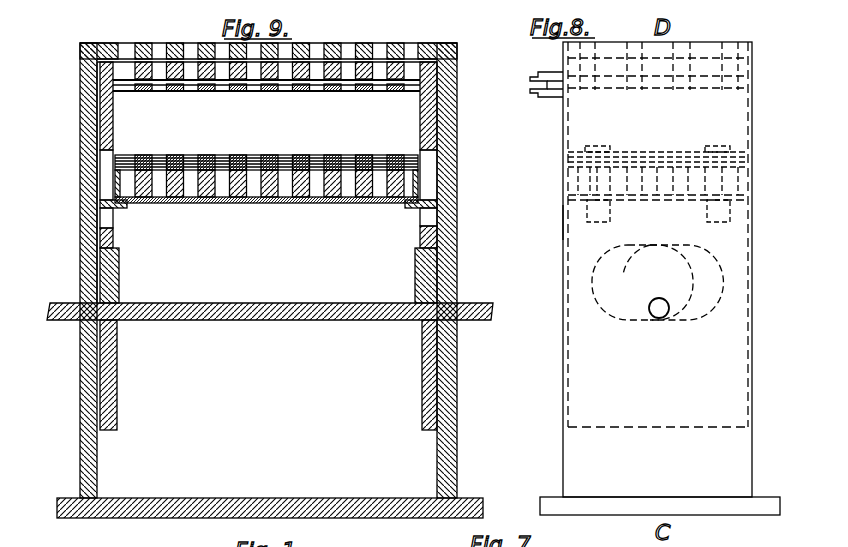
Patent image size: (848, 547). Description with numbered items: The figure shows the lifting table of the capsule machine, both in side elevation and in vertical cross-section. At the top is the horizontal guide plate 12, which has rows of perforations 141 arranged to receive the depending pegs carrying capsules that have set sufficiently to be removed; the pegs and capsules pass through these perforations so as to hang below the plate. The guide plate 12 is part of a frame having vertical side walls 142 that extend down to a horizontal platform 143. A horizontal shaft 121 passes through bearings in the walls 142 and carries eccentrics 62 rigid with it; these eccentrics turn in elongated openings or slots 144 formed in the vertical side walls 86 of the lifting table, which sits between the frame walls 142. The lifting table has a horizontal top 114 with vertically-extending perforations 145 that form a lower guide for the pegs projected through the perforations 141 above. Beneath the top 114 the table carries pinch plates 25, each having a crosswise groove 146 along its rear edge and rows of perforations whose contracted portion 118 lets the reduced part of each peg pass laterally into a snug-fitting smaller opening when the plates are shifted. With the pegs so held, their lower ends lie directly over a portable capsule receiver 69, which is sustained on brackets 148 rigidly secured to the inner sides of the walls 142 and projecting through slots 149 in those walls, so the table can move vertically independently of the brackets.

In FIG. 9, the horizontal guide plate 12 is at (80, 51).
In FIG. 8, the horizontal guide plate 12 is at (752, 50).
In FIG. 9, the horizontal top 114 is at (100, 78).
In FIG. 8, the horizontal top 114 is at (752, 71).
In FIG. 9, the perforations 141 is at (377, 42).
In FIG. 8, the perforations 141 is at (690, 41).
In FIG. 9, the perforations 145 is at (158, 72).
In FIG. 8, the perforations 145 is at (632, 89).
In FIG. 9, the pinch plates 25 is at (245, 82).
In FIG. 8, the pinch plates 25 is at (533, 78).
In FIG. 9, the contracted portion 118 is at (378, 82).
In FIG. 9, the slots 149 is at (104, 162).
In FIG. 8, the slots 149 is at (565, 222).
In FIG. 9, the brackets 148 is at (127, 207).
In FIG. 8, the brackets 148 is at (612, 211).
In FIG. 9, the elongated openings or slots 144 is at (113, 249).
In FIG. 8, the elongated openings or slots 144 is at (708, 318).
In FIG. 9, the eccentrics 62 is at (113, 273).
In FIG. 8, the eccentrics 62 is at (630, 275).
In FIG. 9, the capsule receiver 69 is at (268, 204).
In FIG. 8, the capsule receiver 69 is at (658, 176).
In FIG. 9, the horizontal shaft 121 is at (310, 322).
In FIG. 8, the horizontal shaft 121 is at (650, 306).
In FIG. 9, the vertical side walls 86 is at (117, 350).
In FIG. 8, the vertical side walls 86 is at (750, 422).
In FIG. 9, the vertical side walls 142 is at (457, 405).
In FIG. 9, the horizontal platform 143 is at (187, 498).
In FIG. 8, the horizontal platform 143 is at (729, 514).
In FIG. 8, the crosswise groove 146 is at (542, 72).